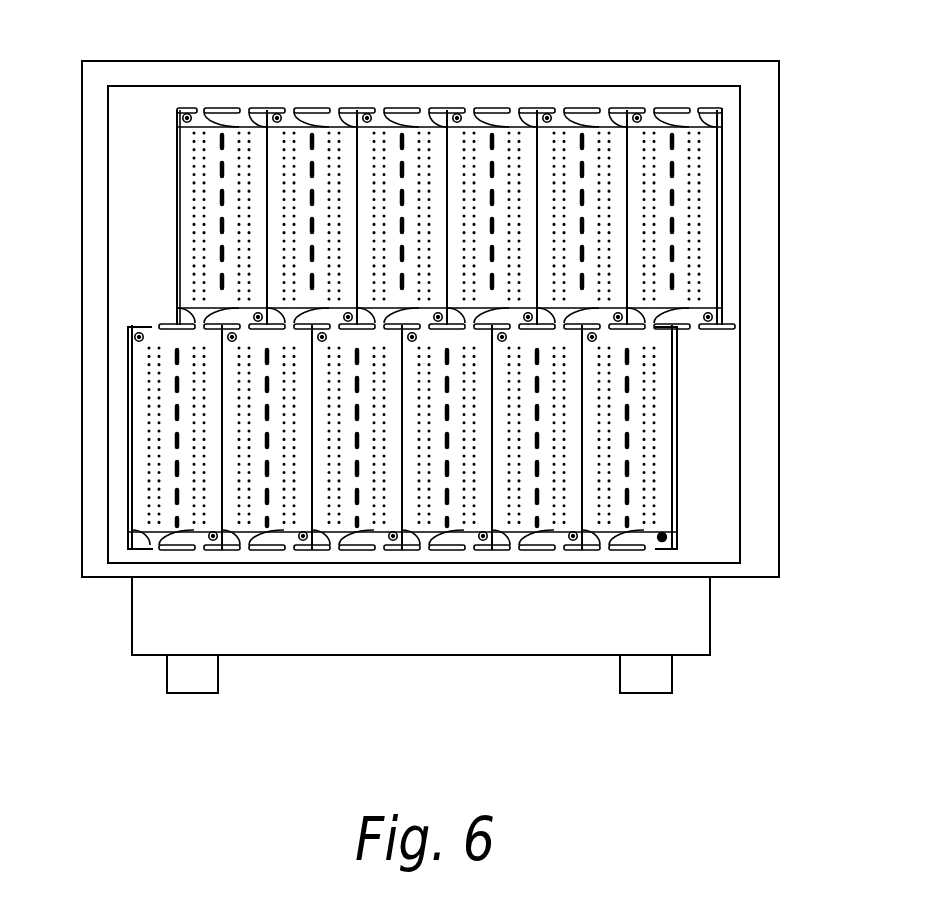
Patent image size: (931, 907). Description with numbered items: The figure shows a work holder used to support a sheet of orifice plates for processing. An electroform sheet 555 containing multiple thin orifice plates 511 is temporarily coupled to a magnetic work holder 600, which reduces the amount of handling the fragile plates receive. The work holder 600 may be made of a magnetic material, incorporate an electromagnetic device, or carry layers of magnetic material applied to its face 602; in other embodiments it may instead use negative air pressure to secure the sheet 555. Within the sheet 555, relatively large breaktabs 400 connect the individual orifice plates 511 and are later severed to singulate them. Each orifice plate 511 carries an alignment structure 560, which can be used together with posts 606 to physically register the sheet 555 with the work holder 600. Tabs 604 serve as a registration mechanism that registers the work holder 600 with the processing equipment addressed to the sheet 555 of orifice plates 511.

The breaktab 400 is at (722, 127).
The orifice plate 511 is at (222, 107).
The electroform sheet 555 is at (742, 528).
The alignment structure 560 is at (184, 122).
The magnetic work holder 600 is at (781, 309).
The face 602 is at (768, 428).
The tabs 604 is at (218, 680).
The posts 606 is at (188, 108).